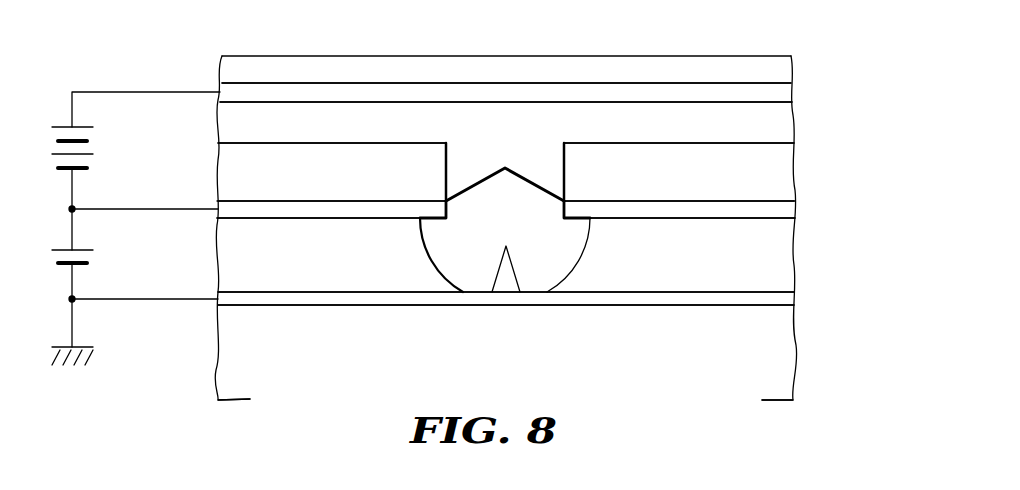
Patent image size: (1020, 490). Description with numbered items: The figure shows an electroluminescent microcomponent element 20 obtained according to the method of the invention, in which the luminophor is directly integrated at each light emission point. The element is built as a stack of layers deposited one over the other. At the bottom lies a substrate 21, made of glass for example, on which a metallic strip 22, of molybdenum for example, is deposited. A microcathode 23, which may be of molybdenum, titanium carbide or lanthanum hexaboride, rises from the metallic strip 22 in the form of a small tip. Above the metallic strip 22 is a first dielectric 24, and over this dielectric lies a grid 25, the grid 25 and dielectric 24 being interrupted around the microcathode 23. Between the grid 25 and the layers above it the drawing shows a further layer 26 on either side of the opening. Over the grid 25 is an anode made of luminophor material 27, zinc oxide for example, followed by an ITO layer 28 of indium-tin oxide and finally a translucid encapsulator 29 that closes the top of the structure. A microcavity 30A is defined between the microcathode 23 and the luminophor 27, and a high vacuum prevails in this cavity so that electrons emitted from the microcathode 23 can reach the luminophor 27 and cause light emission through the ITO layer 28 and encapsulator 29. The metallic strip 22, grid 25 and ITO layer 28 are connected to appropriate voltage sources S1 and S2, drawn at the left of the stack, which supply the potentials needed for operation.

The microcomponent element 20 is at (533, 208).
The substrate 21 is at (792, 353).
The metallic strip 22 is at (785, 298).
The microcathode 23 is at (510, 300).
The first dielectric 24 is at (228, 262).
The grid 25 is at (785, 212).
The electrode layer 26 is at (785, 172).
The anode made of luminophor material 27 is at (782, 122).
The ITO layer 28 is at (782, 92).
The translucid encapsulator 29 is at (790, 55).
The microcavity 30A is at (458, 302).
The voltage source S1 is at (120, 276).
The voltage source S2 is at (121, 150).